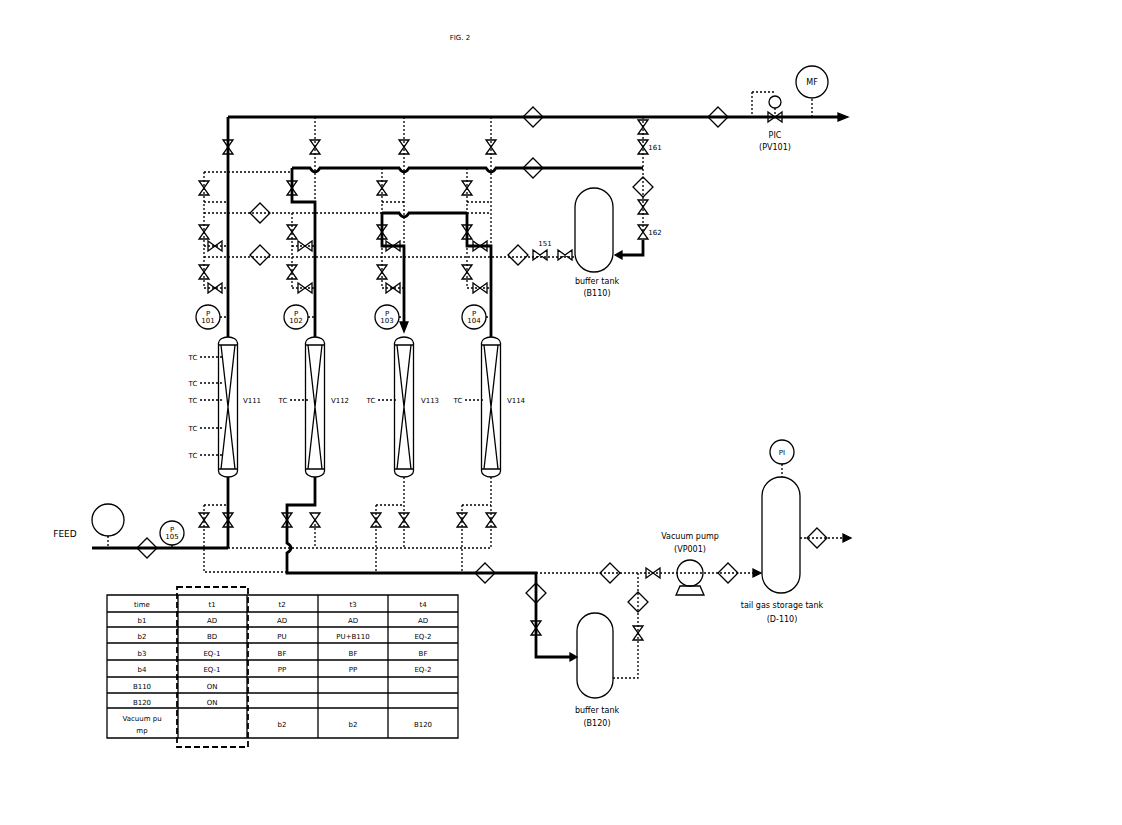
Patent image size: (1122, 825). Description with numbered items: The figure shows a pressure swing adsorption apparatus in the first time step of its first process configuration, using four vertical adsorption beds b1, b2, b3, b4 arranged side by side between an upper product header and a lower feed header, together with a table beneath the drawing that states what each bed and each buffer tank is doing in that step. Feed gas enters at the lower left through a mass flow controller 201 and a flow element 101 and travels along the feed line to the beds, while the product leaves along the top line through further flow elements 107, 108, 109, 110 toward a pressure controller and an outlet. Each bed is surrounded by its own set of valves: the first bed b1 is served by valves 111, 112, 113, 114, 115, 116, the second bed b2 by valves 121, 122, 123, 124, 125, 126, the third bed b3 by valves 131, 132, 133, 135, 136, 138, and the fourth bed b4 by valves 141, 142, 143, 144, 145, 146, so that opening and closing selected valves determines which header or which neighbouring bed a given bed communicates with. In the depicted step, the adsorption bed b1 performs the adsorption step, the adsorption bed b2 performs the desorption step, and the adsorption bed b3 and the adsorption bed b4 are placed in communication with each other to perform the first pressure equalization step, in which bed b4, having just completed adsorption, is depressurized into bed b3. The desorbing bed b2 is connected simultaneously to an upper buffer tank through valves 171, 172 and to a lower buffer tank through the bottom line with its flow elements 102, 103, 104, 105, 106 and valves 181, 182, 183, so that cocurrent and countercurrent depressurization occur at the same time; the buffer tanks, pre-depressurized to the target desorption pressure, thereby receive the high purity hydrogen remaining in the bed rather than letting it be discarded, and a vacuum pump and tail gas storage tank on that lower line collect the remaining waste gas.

The adsorption bed b1 is at (233, 455).
The adsorption bed b2 is at (320, 455).
The adsorption bed b3 is at (409, 455).
The adsorption bed b4 is at (496, 455).
The mass flow controller 201 is at (108, 520).
The valve 111 is at (221, 520).
The valve 112 is at (219, 147).
The valve 113 is at (201, 279).
The valve 114 is at (201, 238).
The valve 115 is at (196, 520).
The valve 116 is at (195, 188).
The valve 121 is at (307, 520).
The valve 122 is at (306, 147).
The valve 123 is at (290, 279).
The valve 124 is at (290, 238).
The valve 125 is at (279, 520).
The valve 126 is at (283, 188).
The valve 131 is at (396, 520).
The valve 132 is at (395, 147).
The valve 133 is at (379, 279).
The valve 135 is at (368, 520).
The valve 136 is at (379, 238).
The valve 138 is at (373, 188).
The valve 141 is at (483, 520).
The valve 142 is at (482, 147).
The valve 143 is at (465, 279).
The valve 144 is at (465, 238).
The valve 145 is at (454, 520).
The valve 146 is at (458, 188).
The valve 171 is at (651, 127).
The valve 172 is at (651, 207).
The valve 181 is at (653, 579).
The valve 182 is at (528, 628).
The valve 183 is at (646, 633).
The flow meter 101 is at (147, 548).
The flow meter 102 is at (485, 573).
The flow meter 103 is at (536, 593).
The flow meter 104 is at (610, 573).
The flow meter 105 is at (638, 602).
The flow meter 106 is at (728, 573).
The flow meter 107 is at (533, 117).
The flow meter 108 is at (533, 168).
The flow meter 109 is at (260, 213).
The flow meter 110 is at (260, 255).